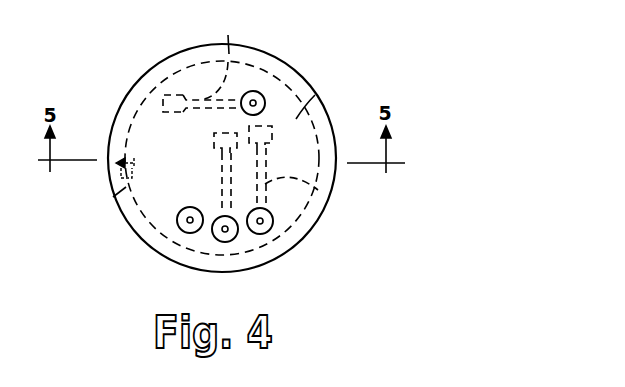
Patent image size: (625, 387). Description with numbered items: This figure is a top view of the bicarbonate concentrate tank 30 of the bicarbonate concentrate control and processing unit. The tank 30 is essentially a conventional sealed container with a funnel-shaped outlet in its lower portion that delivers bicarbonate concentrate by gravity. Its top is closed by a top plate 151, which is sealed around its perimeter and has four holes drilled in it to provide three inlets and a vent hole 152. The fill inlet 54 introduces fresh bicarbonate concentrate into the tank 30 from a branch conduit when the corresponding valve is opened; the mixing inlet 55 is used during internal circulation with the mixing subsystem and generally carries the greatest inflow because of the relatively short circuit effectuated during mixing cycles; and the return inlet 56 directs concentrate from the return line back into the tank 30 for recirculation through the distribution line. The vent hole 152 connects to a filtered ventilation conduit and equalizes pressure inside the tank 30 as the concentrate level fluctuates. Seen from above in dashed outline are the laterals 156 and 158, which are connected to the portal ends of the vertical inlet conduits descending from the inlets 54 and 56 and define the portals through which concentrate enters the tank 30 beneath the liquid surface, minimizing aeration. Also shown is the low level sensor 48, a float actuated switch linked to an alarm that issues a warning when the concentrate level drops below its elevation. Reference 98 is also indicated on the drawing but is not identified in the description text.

The bicarbonate concentrate tank 30 is at (142, 113).
The low level sensor 48 is at (107, 198).
The fill inlet 54 is at (269, 229).
The mixing inlet 55 is at (226, 242).
The return inlet 56 is at (258, 92).
The inner wall 98 is at (184, 71).
The top plate 151 is at (315, 95).
The vent hole 152 is at (182, 231).
The lateral conduit 156 is at (322, 190).
The lateral conduit 158 is at (221, 54).